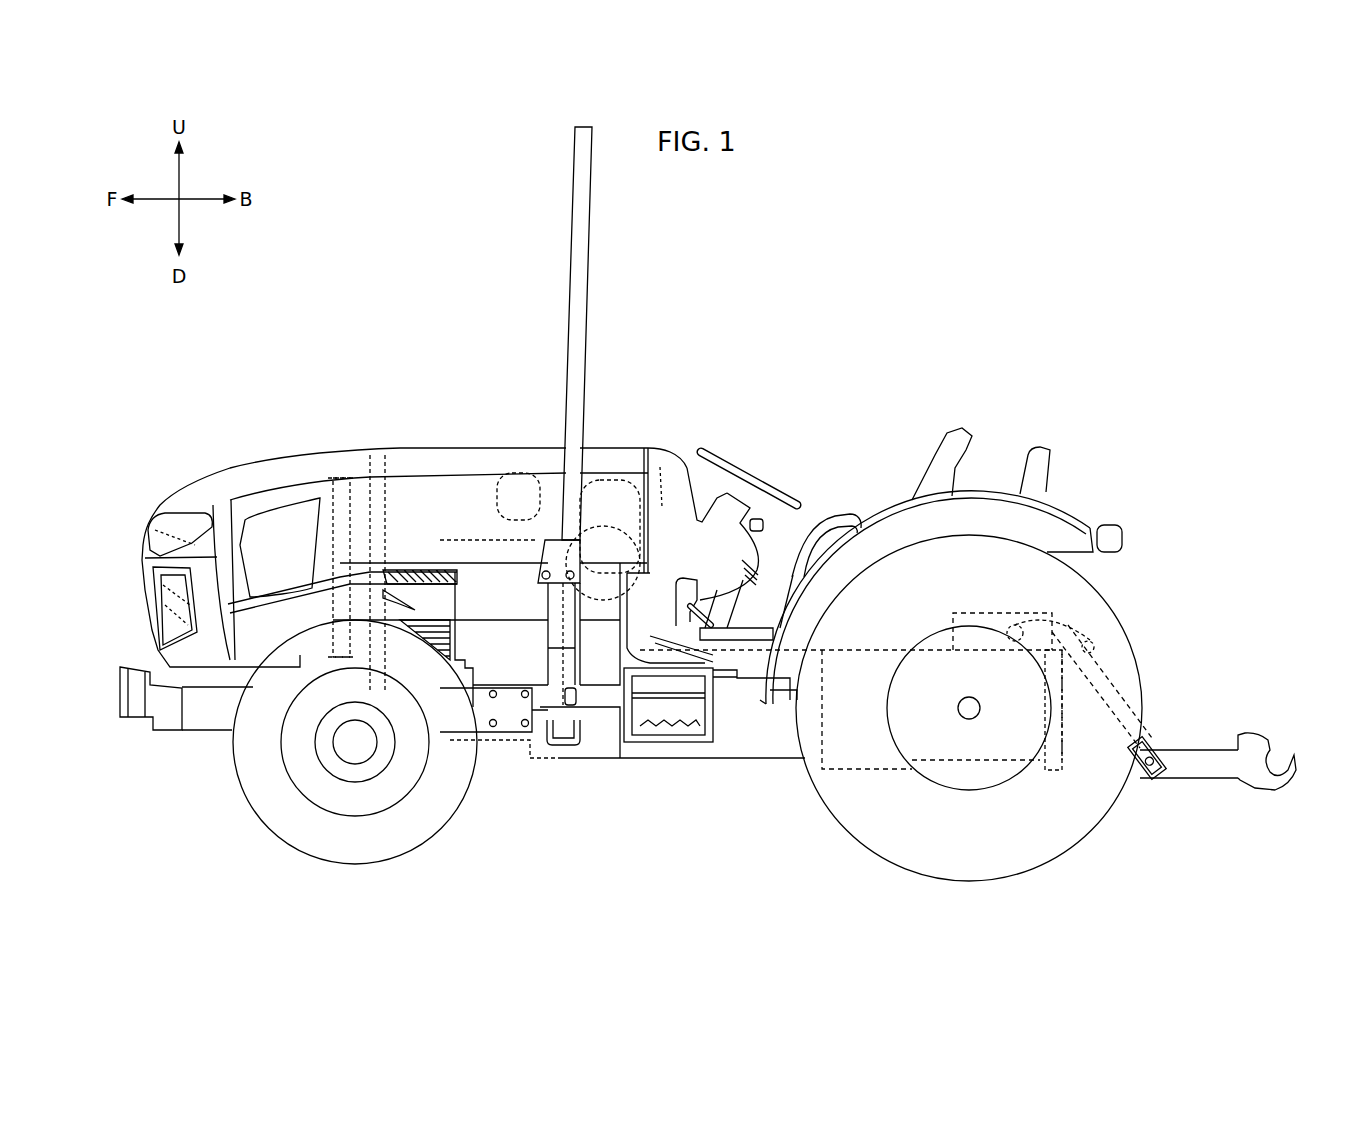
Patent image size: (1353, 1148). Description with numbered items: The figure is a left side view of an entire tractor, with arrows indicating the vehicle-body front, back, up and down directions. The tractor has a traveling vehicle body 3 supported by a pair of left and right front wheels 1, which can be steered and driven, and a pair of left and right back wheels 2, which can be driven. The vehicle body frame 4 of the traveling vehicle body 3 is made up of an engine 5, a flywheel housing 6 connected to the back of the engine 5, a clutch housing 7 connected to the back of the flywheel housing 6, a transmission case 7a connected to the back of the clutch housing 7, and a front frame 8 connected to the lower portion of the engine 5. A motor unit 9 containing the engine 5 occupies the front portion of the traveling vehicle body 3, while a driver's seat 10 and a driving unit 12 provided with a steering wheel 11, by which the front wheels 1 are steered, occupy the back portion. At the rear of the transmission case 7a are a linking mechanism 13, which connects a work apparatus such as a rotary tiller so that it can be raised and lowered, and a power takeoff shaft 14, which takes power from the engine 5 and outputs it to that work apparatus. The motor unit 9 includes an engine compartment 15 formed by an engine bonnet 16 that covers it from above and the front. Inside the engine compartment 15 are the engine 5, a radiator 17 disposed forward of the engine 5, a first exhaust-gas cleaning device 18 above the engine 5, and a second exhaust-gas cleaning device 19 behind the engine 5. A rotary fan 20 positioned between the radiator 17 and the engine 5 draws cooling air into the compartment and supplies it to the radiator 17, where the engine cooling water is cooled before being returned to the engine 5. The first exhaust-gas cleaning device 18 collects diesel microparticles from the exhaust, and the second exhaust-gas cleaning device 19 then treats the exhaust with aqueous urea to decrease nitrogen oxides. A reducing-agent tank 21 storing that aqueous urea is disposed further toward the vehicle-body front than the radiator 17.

The front wheels 1 is at (305, 838).
The back wheels 2 is at (1060, 838).
The traveling vehicle body 3 is at (627, 800).
The vehicle body frame 4 is at (678, 762).
The engine 5 is at (457, 750).
The flywheel housing 6 is at (598, 740).
The clutch housing 7 is at (758, 745).
The transmission case 7a is at (873, 775).
The front frame 8 is at (207, 720).
The motor unit 9 is at (247, 447).
The driver's seat 10 is at (927, 478).
The steering wheel 11 is at (747, 473).
The driving unit 12 is at (830, 455).
The linking mechanism 13 is at (1178, 690).
The power takeoff shaft 14 is at (1085, 770).
The engine compartment 15 is at (437, 510).
The engine bonnet 16 is at (207, 488).
The radiator 17 is at (300, 490).
The first exhaust-gas cleaning device 18 is at (500, 500).
The second exhaust-gas cleaning device 19 is at (665, 456).
The rotary fan 20 is at (385, 545).
The reducing-agent tank 21 is at (190, 545).